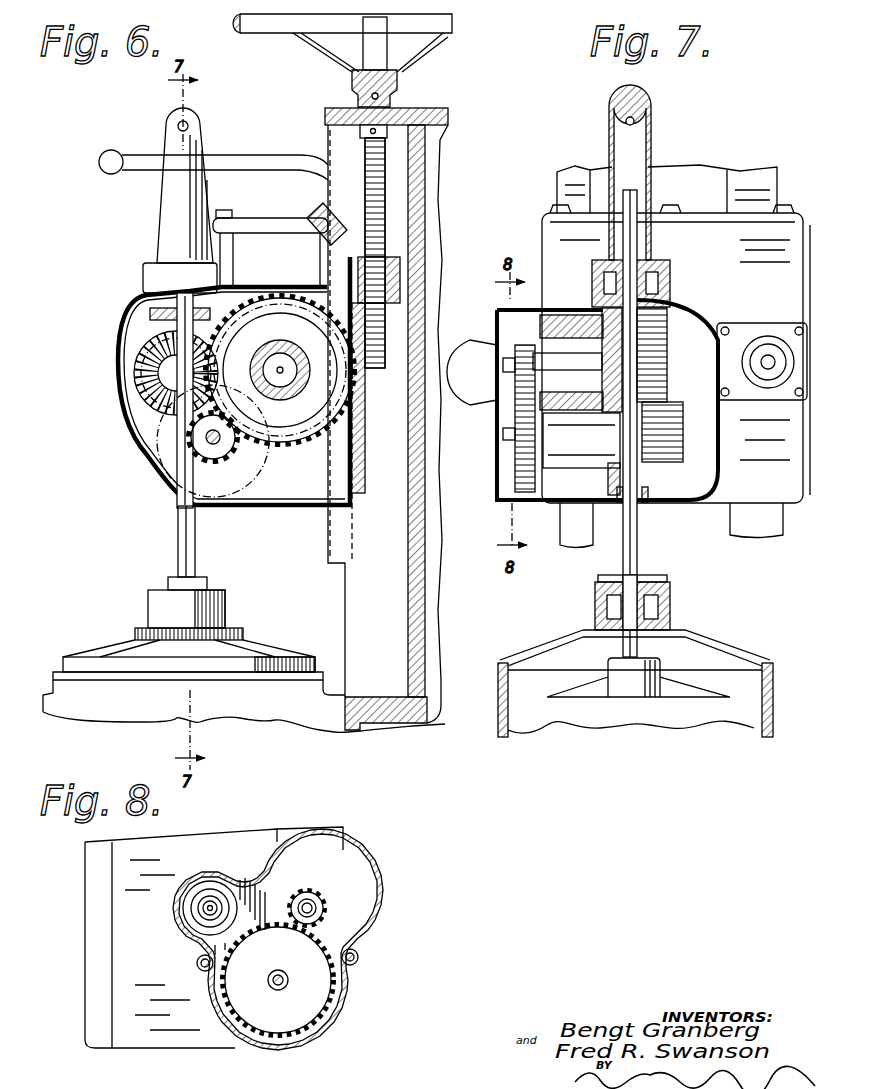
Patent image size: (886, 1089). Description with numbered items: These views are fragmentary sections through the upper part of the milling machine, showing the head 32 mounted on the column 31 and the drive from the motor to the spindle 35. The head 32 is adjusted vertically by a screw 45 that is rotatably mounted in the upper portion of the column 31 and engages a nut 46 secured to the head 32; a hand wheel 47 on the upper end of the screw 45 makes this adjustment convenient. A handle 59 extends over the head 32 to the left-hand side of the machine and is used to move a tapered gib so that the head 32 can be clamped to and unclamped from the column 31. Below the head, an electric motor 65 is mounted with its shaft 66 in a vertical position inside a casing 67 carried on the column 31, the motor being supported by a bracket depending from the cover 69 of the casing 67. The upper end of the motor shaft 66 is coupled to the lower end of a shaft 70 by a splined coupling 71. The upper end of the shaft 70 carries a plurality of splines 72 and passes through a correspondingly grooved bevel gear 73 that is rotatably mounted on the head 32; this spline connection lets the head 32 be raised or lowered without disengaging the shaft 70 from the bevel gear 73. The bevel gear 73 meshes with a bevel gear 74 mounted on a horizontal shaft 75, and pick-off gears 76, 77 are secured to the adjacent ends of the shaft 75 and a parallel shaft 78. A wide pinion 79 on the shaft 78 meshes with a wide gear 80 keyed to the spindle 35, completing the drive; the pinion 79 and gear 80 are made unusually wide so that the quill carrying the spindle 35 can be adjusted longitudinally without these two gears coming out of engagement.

In FIG. 6, the column 31 is at (436, 207).
In FIG. 7, the column 31 is at (707, 188).
In FIG. 6, the head 32 is at (160, 487).
In FIG. 7, the head 32 is at (653, 376).
In FIG. 8, the head 32 is at (120, 984).
In FIG. 6, the spindle 35 is at (286, 366).
In FIG. 8, the spindle 35 is at (200, 910).
In FIG. 6, the screw 45 is at (385, 188).
In FIG. 6, the nut 46 is at (412, 260).
In FIG. 6, the hand wheel 47 is at (286, 28).
In FIG. 6, the handle 59 is at (108, 166).
In FIG. 7, the electric motor 65 is at (616, 712).
In FIG. 7, the motor shaft 66 is at (645, 652).
In FIG. 7, the casing 67 is at (498, 700).
In FIG. 6, the cover 69 is at (272, 655).
In FIG. 7, the cover 69 is at (572, 647).
In FIG. 7, the shaft 70 is at (643, 552).
In FIG. 7, the splined coupling 71 is at (655, 580).
In FIG. 7, the splines 72 is at (640, 200).
In FIG. 6, the bevel gear 73 is at (152, 318).
In FIG. 7, the bevel gear 73 is at (667, 292).
In FIG. 6, the bevel gear 74 is at (138, 347).
In FIG. 7, the bevel gear 74 is at (596, 300).
In FIG. 7, the horizontal shaft 75 is at (578, 352).
In FIG. 8, the horizontal shaft 75 is at (318, 908).
In FIG. 6, the pick-off gear 76 is at (150, 380).
In FIG. 7, the pick-off gear 76 is at (505, 385).
In FIG. 8, the pick-off gear 76 is at (308, 896).
In FIG. 6, the pick-off gear 77 is at (150, 427).
In FIG. 7, the pick-off gear 77 is at (516, 440).
In FIG. 8, the pick-off gear 77 is at (278, 980).
In FIG. 6, the parallel shaft 78 is at (224, 442).
In FIG. 7, the parallel shaft 78 is at (590, 430).
In FIG. 6, the wide pinion 79 is at (222, 458).
In FIG. 7, the wide pinion 79 is at (666, 440).
In FIG. 6, the wide gear 80 is at (280, 370).